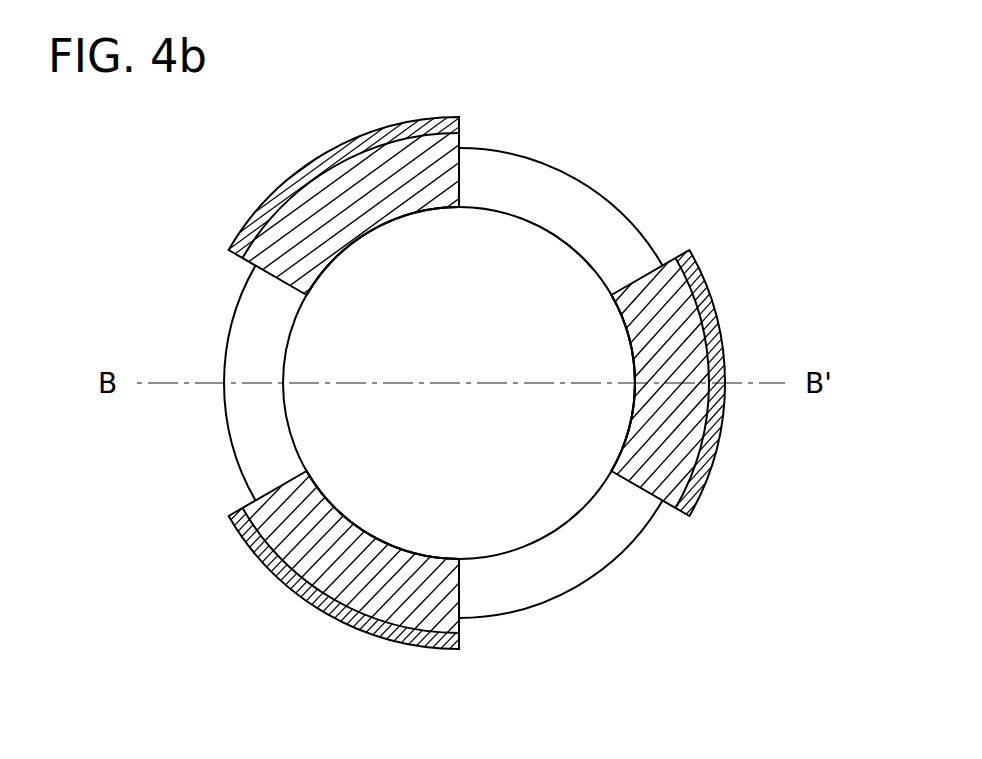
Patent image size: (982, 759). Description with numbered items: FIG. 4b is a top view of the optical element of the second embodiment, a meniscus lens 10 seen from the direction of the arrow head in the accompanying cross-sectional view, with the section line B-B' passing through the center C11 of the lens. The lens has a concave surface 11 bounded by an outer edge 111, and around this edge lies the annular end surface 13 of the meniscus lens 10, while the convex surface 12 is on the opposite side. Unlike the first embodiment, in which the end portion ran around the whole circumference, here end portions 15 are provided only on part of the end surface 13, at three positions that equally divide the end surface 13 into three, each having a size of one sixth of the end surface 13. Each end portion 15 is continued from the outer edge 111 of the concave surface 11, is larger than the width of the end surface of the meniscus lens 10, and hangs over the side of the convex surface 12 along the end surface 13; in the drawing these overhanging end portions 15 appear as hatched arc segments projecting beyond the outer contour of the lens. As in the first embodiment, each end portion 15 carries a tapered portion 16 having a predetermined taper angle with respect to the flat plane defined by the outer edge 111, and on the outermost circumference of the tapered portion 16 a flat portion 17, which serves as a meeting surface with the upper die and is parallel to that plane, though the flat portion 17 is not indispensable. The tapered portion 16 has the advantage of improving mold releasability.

The meniscus lens 10 is at (577, 207).
The concave surface 11 is at (488, 267).
The outer edge 111 is at (580, 250).
The convex surface 12 is at (630, 218).
The end surface 13 is at (598, 535).
The end portion 15 is at (343, 175).
The tapered portion 16 is at (653, 358).
The flat portion 17 is at (413, 117).
The center axis C11 is at (458, 383).